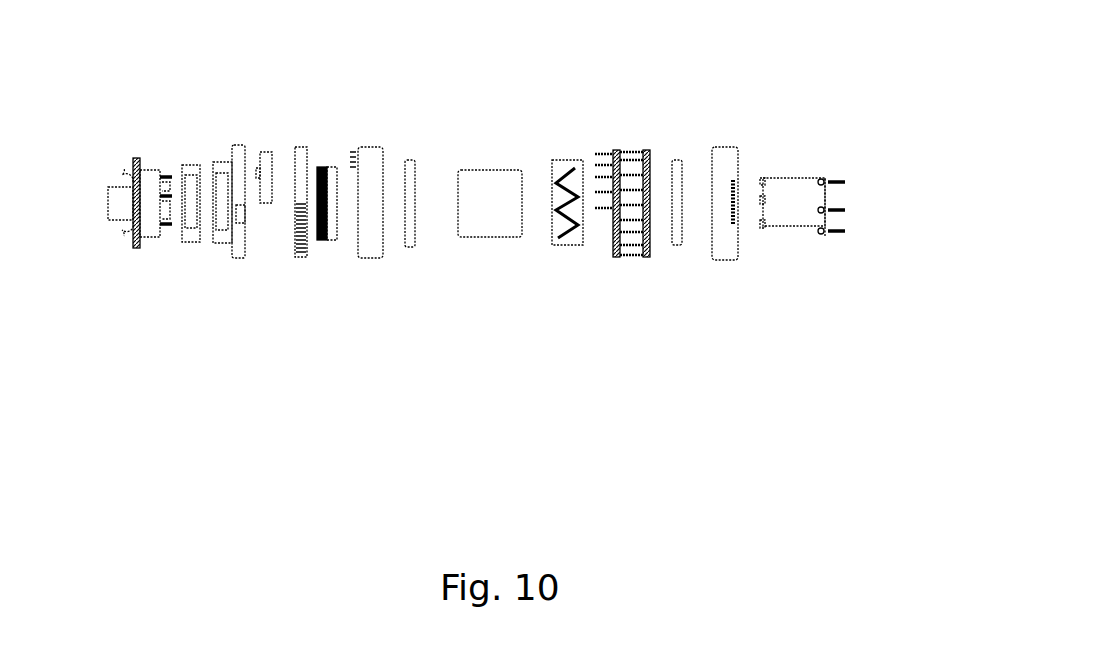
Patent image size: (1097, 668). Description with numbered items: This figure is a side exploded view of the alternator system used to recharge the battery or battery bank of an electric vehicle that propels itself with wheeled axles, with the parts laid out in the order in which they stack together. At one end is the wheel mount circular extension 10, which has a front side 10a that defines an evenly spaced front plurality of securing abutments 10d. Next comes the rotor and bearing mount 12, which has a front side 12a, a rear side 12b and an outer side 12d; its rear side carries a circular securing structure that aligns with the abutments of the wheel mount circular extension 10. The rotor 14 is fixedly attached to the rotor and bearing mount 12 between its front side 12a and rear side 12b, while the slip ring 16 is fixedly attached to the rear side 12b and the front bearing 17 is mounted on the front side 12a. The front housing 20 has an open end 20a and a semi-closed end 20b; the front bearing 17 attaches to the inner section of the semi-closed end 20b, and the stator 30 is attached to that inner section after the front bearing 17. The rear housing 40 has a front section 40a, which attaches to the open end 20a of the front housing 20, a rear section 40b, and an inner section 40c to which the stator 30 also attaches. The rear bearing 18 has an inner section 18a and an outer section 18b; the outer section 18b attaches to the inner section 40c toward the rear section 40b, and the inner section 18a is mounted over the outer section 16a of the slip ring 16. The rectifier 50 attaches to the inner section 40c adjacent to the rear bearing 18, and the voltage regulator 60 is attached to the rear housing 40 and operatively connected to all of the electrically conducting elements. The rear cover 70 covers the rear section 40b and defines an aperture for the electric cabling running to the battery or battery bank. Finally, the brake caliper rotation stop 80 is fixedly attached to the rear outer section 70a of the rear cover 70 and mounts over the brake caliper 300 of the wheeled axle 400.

The wheel mount circular extension 10 is at (802, 207).
The front side 10a is at (843, 237).
The front plurality of securing abutments 10d is at (854, 234).
The rotor and bearing mount 12 is at (491, 312).
The front side 12a is at (522, 184).
The rear side 12b is at (459, 205).
The outer side 12d is at (499, 203).
The rotor 14 is at (577, 180).
The slip ring 16 is at (324, 166).
The outer section of the slip ring 16a is at (357, 232).
The front bearing 17 is at (684, 254).
The rear bearing 18 is at (419, 256).
The inner section 18a is at (417, 183).
The outer section 18b is at (413, 185).
The front housing 20 is at (728, 259).
The open end 20a is at (712, 165).
The semi-closed end 20b is at (738, 162).
The stator 30 is at (634, 263).
The rear housing 40 is at (373, 260).
The front section 40a is at (375, 262).
The rear section 40b is at (334, 244).
The inner section 40c is at (372, 153).
The rectifier 50 is at (302, 264).
The voltage regulator 60 is at (268, 208).
The rear cover 70 is at (237, 269).
The rear outer section of the rear cover 70a is at (231, 163).
The brake caliper rotation stop 80 is at (188, 251).
The brake caliper 300 is at (119, 171).
The wheeled axle 400 is at (101, 199).